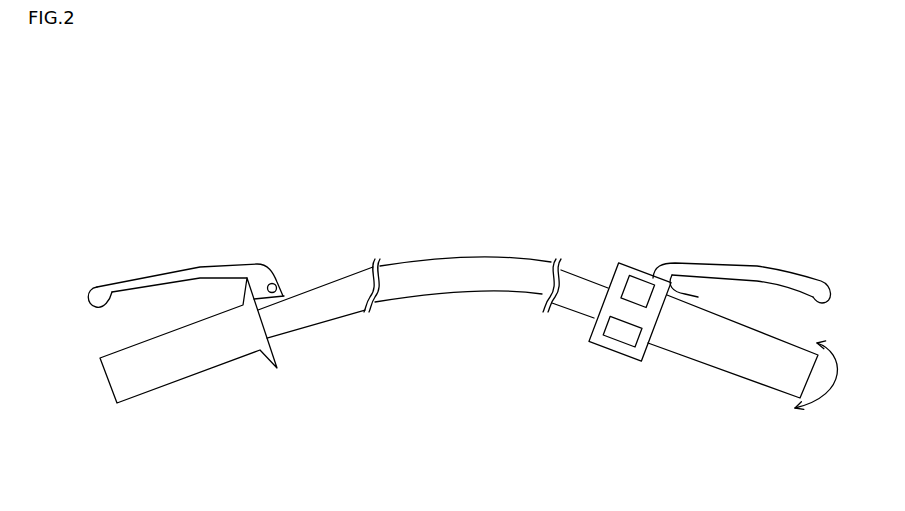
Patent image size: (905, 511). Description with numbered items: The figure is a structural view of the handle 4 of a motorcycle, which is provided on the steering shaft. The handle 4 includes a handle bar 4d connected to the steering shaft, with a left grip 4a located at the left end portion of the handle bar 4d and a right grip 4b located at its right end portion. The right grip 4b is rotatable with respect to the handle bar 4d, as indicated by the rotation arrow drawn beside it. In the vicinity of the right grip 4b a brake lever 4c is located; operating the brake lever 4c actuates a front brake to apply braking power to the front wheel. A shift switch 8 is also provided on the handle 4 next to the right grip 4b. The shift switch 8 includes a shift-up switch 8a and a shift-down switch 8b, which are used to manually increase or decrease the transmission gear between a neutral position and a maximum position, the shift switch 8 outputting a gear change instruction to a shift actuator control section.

The handle 4 is at (540, 195).
The left grip 4a is at (190, 382).
The right grip 4b is at (730, 372).
The brake lever 4c is at (792, 277).
The handle bar 4d is at (458, 255).
The shift switch 8 is at (650, 302).
The shift-up switch 8a is at (689, 290).
The shift-down switch 8b is at (640, 308).